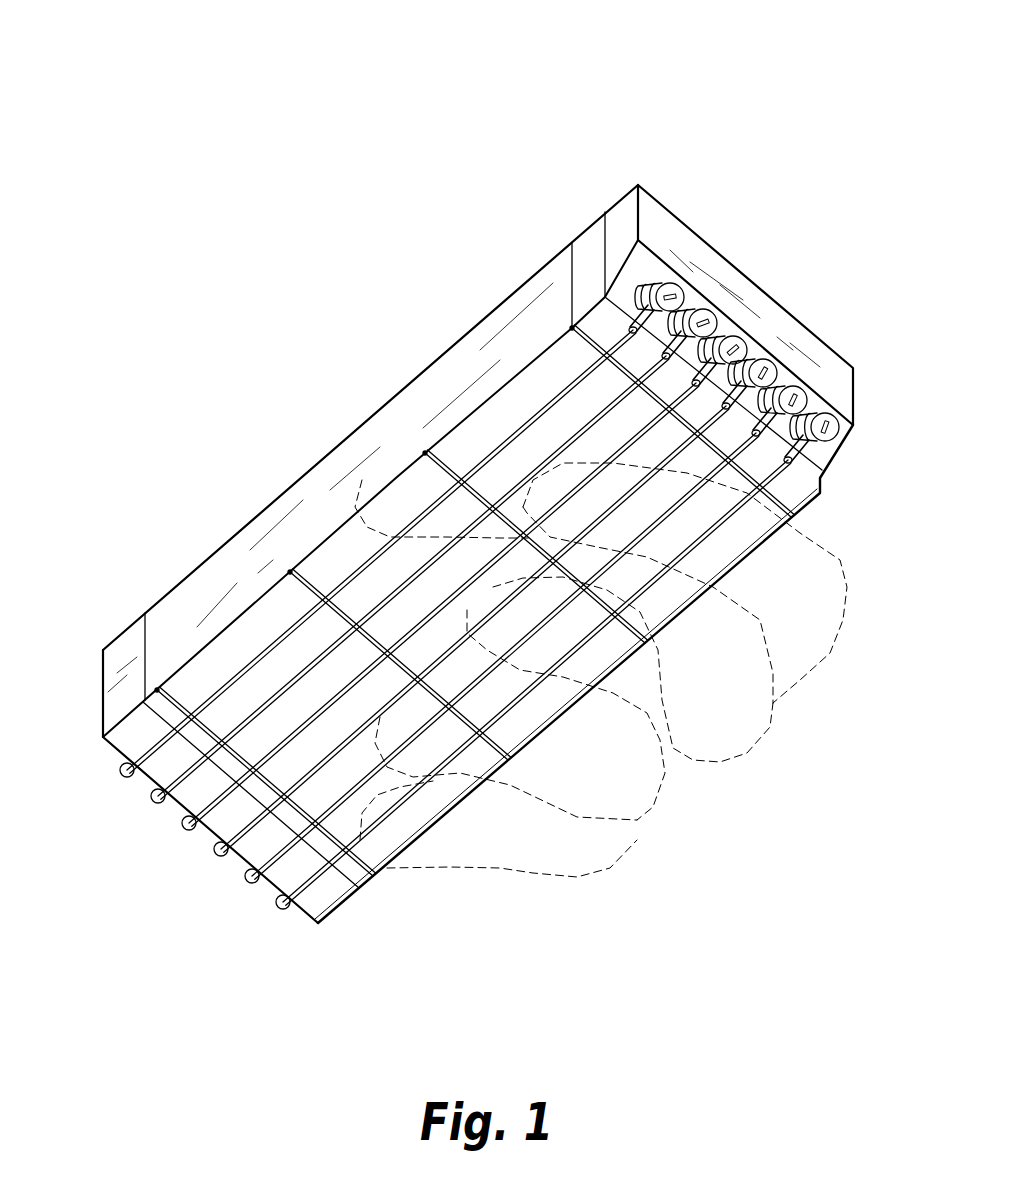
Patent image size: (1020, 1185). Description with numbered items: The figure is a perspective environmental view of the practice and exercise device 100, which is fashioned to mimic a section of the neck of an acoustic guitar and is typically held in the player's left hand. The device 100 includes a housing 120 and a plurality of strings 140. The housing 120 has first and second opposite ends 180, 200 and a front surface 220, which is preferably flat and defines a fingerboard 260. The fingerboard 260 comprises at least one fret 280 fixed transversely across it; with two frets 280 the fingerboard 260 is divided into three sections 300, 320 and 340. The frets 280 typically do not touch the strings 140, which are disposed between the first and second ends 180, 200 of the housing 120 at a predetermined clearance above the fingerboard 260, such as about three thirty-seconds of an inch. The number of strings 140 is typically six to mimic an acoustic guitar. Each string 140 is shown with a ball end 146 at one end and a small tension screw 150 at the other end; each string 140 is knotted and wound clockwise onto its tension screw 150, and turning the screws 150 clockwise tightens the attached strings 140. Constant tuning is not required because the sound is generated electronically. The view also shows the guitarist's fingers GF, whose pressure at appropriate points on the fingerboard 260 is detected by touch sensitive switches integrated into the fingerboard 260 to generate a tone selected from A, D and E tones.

The practice and exercise device 100 is at (346, 202).
The housing 120 is at (492, 337).
The strings 140 is at (525, 422).
The ball end 146 is at (153, 800).
The tension screw 150 is at (703, 325).
The first end 180 is at (337, 790).
The second end 200 is at (558, 242).
The front surface 220 is at (254, 690).
The fingerboard 260 is at (240, 778).
The fret 280 is at (428, 474).
The first section 300 is at (304, 860).
The second section 320 is at (387, 572).
The third section 340 is at (533, 388).
The guitarist's fingers GF is at (527, 875).